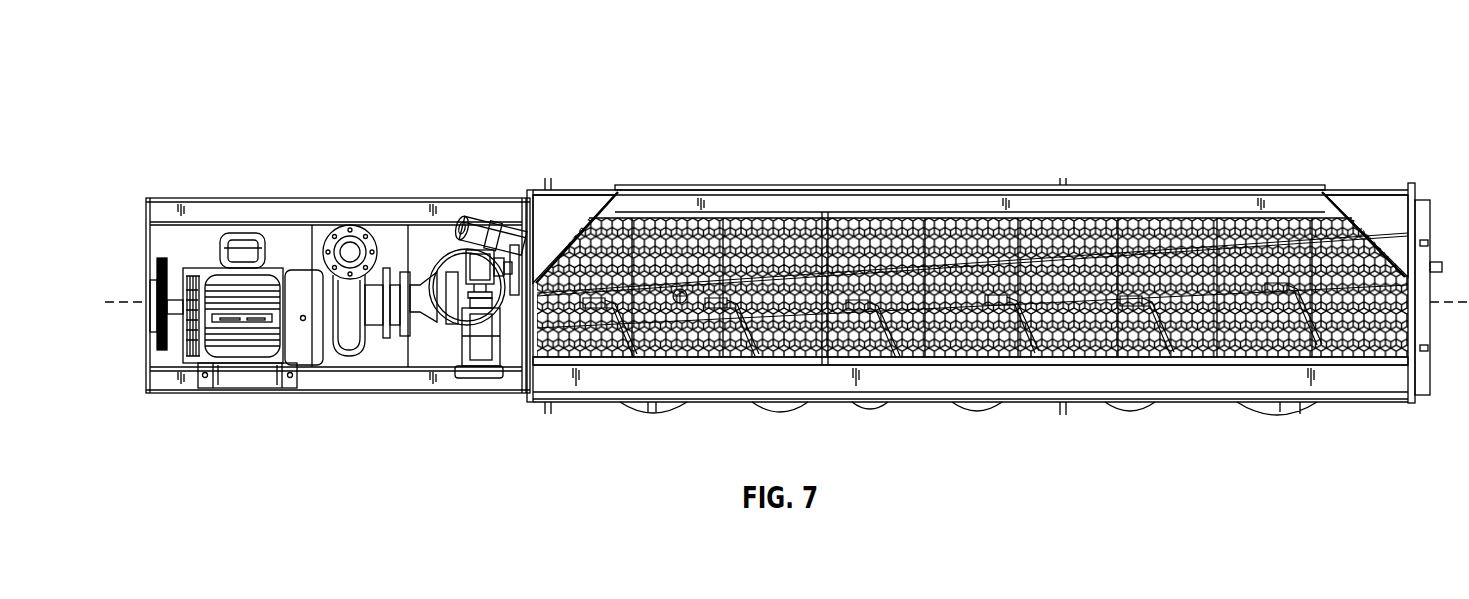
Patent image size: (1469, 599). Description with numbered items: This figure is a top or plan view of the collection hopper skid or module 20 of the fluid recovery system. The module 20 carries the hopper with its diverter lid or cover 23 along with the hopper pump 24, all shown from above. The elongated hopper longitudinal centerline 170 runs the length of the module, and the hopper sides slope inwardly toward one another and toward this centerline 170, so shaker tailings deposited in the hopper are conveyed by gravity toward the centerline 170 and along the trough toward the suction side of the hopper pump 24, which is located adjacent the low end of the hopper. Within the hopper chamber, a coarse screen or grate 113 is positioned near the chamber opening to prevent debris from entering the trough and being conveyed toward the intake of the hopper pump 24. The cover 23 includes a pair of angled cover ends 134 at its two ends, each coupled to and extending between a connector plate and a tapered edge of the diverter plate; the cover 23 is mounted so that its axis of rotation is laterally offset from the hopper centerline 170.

The collection hopper skid or module 20 is at (164, 60).
The diverter lid or cover 23 is at (868, 185).
The hopper pump 24 is at (350, 342).
The course screen or grate 113 is at (1248, 360).
The angled cover ends 134 is at (565, 212).
The hopper longitudinal centerline 170 is at (128, 304).